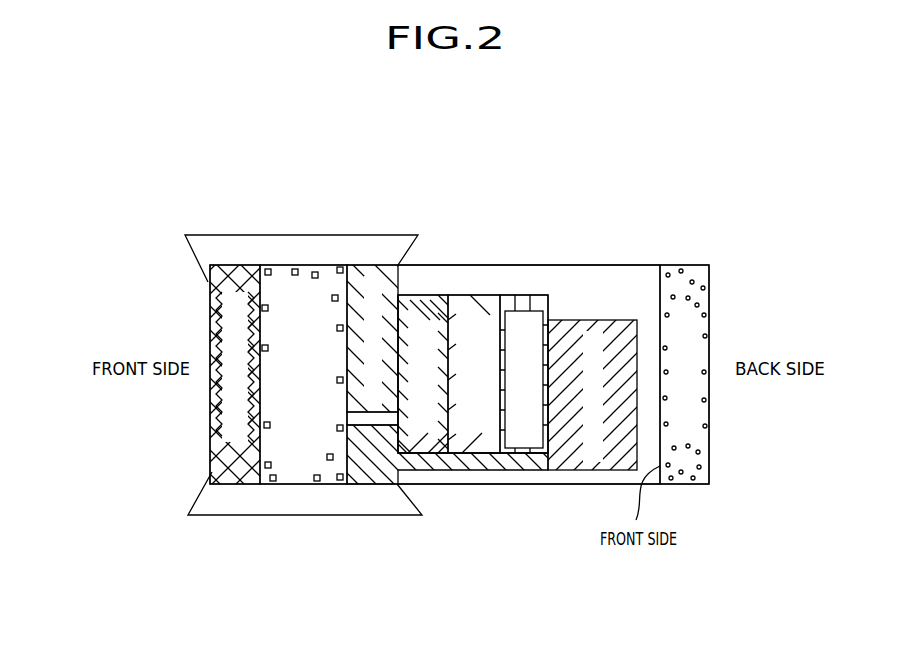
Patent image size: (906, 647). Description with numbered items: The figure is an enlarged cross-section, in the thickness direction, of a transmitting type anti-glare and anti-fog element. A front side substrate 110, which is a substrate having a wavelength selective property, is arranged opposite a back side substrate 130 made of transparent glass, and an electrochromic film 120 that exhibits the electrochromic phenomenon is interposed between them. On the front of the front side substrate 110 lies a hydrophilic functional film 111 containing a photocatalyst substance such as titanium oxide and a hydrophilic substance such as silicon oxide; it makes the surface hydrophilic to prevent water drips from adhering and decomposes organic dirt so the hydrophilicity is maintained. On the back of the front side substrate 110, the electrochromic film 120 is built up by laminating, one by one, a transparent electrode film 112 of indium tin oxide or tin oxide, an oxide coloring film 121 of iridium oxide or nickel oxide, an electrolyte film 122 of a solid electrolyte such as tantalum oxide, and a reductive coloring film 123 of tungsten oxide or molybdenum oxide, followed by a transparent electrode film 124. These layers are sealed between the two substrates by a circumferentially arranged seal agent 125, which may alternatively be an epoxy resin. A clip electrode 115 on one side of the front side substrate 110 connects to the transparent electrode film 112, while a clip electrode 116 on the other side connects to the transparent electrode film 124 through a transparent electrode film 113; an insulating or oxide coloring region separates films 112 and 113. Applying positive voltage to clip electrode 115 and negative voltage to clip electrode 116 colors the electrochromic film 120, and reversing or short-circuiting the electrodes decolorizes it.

The front side substrate 110 is at (303, 272).
The hydrophilic functional film 111 is at (235, 487).
The transparent electrode film 112 is at (357, 268).
The transparent electrode film 113 is at (383, 468).
The clip electrode 115 is at (188, 246).
The clip electrode 116 is at (208, 499).
The electrochromic film 120 is at (545, 190).
The oxide coloring film 121 is at (415, 298).
The electrolyte film 122 is at (468, 298).
The reductive coloring film 123 is at (523, 305).
The transparent electrode film 124 is at (582, 322).
The seal agent 125 is at (640, 287).
The back side substrate 130 is at (684, 460).